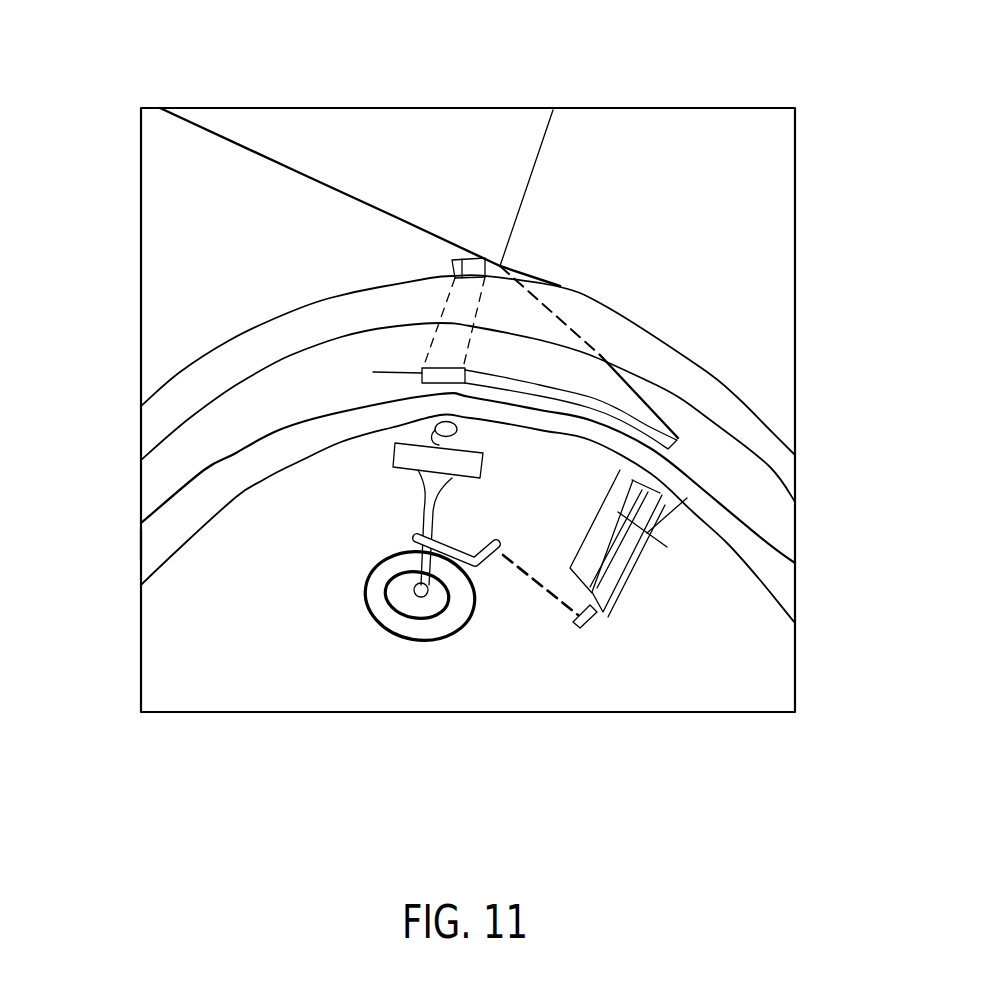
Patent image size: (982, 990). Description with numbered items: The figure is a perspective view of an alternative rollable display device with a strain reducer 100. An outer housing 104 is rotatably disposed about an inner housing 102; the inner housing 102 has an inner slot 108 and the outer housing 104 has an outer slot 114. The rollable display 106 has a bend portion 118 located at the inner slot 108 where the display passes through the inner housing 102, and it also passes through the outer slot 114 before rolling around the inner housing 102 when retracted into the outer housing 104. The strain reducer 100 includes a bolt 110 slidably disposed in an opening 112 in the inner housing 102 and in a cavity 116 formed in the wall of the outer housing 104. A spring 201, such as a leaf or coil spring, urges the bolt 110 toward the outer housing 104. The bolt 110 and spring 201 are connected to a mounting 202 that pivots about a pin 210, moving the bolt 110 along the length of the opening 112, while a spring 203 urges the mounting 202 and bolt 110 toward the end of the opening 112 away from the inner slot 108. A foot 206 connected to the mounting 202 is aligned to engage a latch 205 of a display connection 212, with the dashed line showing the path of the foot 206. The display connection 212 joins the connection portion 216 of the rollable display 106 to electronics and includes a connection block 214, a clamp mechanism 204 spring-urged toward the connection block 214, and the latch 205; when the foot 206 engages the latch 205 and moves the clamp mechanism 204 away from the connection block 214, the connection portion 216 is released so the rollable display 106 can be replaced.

The strain reducer 100 is at (170, 298).
The inner housing 102 is at (104, 557).
The outer housing 104 is at (484, 235).
The rollable display 106 is at (499, 425).
The inner slot 108 is at (505, 412).
The bolt 110 is at (646, 243).
The opening 112 is at (238, 399).
The outer slot 114 is at (606, 151).
The cavity 116 is at (307, 197).
The bend portion 118 is at (506, 490).
The spring 201 is at (482, 461).
The mounting 202 is at (272, 561).
The spring 203 is at (405, 671).
The clamp mechanism 204 is at (724, 580).
The latch 205 is at (683, 688).
The foot 206 is at (532, 695).
The pin 210 is at (455, 662).
The display connection 212 is at (598, 666).
The connection block 214 is at (582, 548).
The connection portion 216 is at (745, 532).